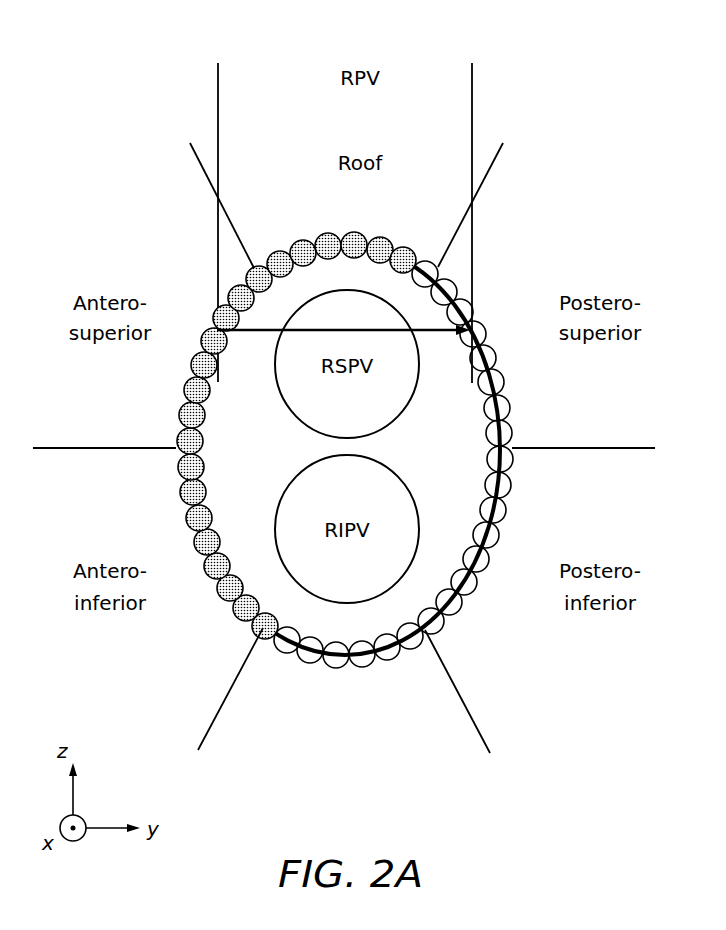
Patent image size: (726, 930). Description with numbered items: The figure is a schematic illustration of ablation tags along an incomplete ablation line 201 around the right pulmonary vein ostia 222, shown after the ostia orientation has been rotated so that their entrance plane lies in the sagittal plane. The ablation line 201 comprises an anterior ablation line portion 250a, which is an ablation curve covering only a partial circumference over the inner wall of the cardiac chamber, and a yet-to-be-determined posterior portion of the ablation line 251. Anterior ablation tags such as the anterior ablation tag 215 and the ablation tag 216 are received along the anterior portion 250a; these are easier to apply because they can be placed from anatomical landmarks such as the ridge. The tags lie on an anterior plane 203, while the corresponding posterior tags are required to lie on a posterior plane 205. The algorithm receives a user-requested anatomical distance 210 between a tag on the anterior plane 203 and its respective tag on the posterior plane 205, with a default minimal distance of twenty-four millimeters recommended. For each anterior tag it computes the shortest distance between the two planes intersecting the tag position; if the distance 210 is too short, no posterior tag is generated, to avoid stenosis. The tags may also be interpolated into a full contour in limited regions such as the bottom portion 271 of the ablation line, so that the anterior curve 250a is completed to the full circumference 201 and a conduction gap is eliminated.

The ablation line 201 is at (176, 200).
The anterior plane 203 is at (218, 108).
The posterior plane 205 is at (472, 97).
The anatomical distance 210 is at (256, 336).
The anterior ablation tag 215 is at (209, 325).
The ablation tag 216 is at (486, 326).
The right pulmonary vein ostia 222 is at (562, 199).
The anterior ablation line portion 250a is at (178, 440).
The posterior portion of ablation line 251 is at (442, 630).
The bottom portion of ablation line 271 is at (344, 699).